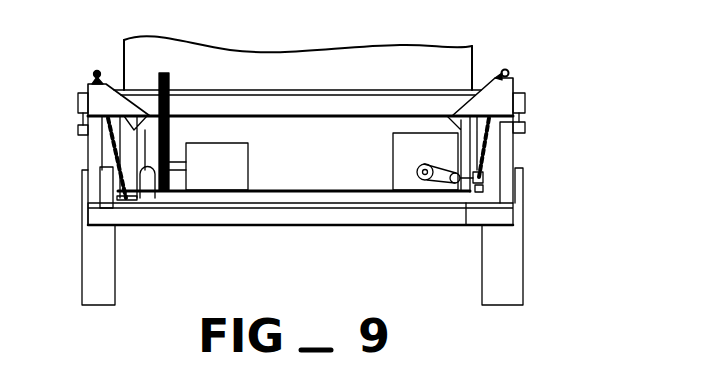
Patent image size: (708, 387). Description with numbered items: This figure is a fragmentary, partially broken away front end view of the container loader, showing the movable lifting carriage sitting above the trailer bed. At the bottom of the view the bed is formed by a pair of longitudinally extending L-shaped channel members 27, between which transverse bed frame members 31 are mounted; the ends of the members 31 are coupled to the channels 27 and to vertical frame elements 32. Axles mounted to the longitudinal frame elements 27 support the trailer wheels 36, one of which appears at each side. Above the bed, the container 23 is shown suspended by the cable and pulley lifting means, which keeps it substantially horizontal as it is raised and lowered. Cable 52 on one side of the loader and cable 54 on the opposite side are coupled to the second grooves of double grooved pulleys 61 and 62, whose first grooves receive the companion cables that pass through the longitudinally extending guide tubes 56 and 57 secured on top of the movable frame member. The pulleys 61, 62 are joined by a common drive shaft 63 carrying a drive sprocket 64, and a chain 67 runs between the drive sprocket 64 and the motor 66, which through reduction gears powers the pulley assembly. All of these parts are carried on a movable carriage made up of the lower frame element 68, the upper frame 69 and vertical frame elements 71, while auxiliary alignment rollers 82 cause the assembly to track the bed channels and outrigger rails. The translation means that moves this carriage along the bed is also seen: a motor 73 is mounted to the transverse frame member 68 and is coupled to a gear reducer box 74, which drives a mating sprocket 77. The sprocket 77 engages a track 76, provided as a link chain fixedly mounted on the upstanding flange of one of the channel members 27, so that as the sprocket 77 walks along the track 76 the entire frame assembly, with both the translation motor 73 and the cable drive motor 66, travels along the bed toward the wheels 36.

The container 23 is at (472, 62).
The L-shaped channel member 27 is at (468, 216).
The transverse bed frame member 31 is at (232, 225).
The vertical frame element 32 is at (95, 183).
The trailer wheel 36 is at (523, 270).
The cable 52 is at (512, 142).
The cable 54 is at (107, 138).
The guide tube 56 is at (508, 70).
The guide tube 57 is at (94, 74).
The double grooved pulley 61 is at (513, 78).
The double grooved pulley 62 is at (103, 80).
The drive shaft 63 is at (326, 89).
The drive sprocket 64 is at (167, 84).
The motor 66 is at (229, 143).
The chain 67 is at (162, 138).
The lower frame element 68 is at (321, 190).
The upper frame 69 is at (377, 110).
The vertical frame element 71 is at (153, 204).
The motor 73 is at (392, 158).
The gear reducer box 74 is at (453, 172).
The track 76 is at (481, 188).
The sprocket 77 is at (484, 178).
The auxiliary alignment roller 82 is at (82, 125).